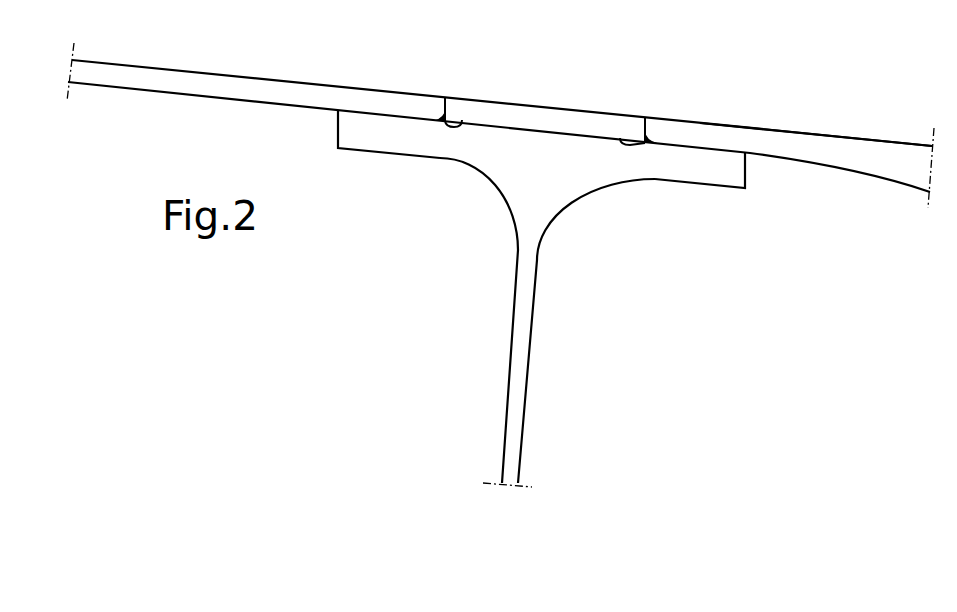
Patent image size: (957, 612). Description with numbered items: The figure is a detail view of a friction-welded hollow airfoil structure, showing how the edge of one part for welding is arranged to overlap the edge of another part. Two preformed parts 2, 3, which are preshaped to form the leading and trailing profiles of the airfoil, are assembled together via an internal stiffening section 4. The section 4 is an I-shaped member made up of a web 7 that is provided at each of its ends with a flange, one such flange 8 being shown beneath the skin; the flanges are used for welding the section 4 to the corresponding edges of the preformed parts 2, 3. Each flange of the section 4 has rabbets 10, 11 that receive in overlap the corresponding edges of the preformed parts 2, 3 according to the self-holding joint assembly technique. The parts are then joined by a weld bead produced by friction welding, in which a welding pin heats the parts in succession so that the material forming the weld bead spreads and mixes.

The preformed part 2 is at (240, 77).
The preformed part 3 is at (838, 137).
The internal stiffening section 4 is at (541, 298).
The web 7 is at (537, 312).
The flange 8 is at (385, 154).
The rabbet 10 is at (462, 120).
The rabbet 11 is at (620, 138).